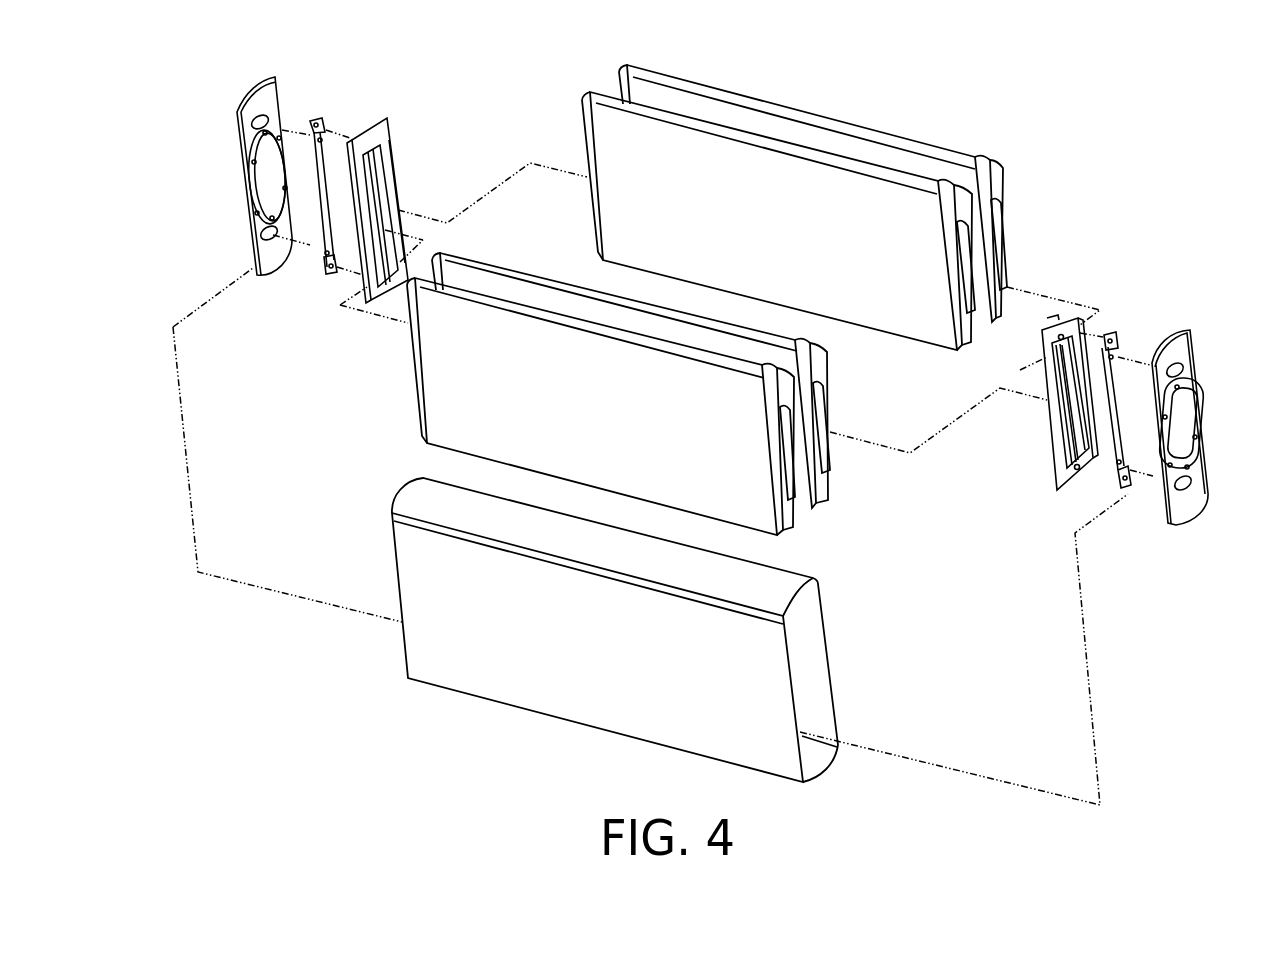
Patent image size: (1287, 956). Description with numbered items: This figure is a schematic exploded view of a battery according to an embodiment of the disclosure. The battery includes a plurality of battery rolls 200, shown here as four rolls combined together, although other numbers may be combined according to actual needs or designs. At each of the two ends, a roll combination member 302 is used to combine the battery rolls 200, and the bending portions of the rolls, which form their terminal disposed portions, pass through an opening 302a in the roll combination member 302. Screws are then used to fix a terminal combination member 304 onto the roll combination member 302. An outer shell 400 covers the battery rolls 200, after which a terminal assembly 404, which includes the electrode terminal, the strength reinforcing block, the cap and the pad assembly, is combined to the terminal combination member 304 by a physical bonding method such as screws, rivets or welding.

The battery roll 200 is at (927, 125).
The roll combination member 302 is at (1057, 467).
The opening 302a is at (1077, 440).
The terminal combination member 304 is at (1125, 482).
The terminal assembly 404 is at (1200, 514).
The outer shell 400 is at (543, 717).